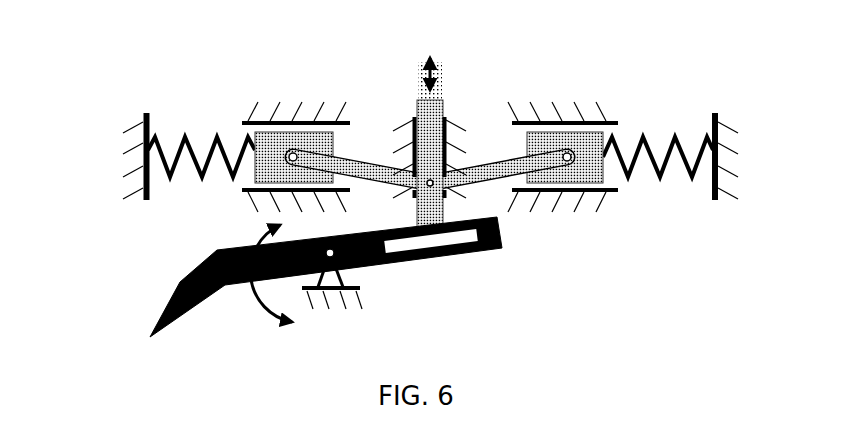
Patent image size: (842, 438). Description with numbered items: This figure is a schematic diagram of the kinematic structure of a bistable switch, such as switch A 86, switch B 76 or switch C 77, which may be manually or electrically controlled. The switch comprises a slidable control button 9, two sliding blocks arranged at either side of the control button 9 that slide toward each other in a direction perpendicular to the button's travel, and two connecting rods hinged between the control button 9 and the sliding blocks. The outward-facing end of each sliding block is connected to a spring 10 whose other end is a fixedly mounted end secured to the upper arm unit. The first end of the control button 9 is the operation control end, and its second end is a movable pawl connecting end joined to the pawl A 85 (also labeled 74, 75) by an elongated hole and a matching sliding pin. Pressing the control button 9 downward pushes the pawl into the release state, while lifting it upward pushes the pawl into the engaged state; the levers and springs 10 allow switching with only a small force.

The control button 9 is at (437, 80).
The spring 10 is at (208, 130).
The pawl A 85 is at (383, 277).
The lever 74 is at (383, 277).
The lever 75 is at (383, 277).
The switch A 86 is at (533, 283).
The switch B 76 is at (533, 283).
The switch C 77 is at (555, 262).